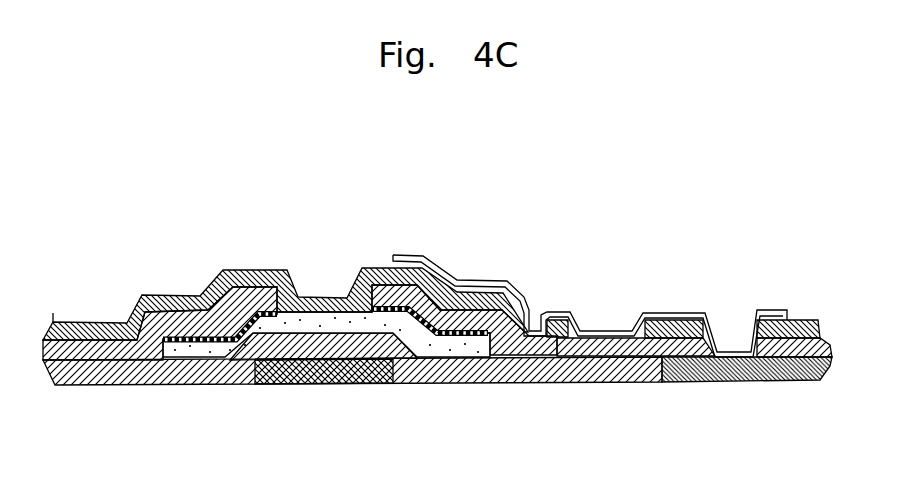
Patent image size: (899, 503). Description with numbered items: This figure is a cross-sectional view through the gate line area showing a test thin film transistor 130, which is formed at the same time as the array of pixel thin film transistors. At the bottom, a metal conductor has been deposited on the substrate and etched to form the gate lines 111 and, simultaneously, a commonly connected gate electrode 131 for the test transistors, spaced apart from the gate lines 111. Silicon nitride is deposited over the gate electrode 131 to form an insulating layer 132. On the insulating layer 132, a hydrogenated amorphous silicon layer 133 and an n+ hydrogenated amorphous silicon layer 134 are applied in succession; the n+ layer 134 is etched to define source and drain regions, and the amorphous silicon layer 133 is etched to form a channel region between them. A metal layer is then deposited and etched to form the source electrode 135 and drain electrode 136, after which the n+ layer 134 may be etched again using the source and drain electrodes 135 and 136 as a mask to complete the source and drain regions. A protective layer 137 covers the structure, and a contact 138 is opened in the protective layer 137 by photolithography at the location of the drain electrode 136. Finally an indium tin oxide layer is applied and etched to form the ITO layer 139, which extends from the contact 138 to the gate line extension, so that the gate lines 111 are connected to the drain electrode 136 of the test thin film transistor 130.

The gate line 111 is at (725, 372).
The test thin film transistor 130 is at (114, 209).
The gate electrode 131 is at (322, 378).
The insulating layer 132 is at (586, 370).
The amorphous silicon layer 133 is at (488, 356).
The n+ hydrogenated amorphous silicon layer 134 is at (202, 348).
The source electrode 135 is at (215, 278).
The drain electrode 136 is at (424, 284).
The protective layer 137 is at (324, 298).
The contact 138 is at (541, 312).
The ITO layer 139 is at (676, 311).